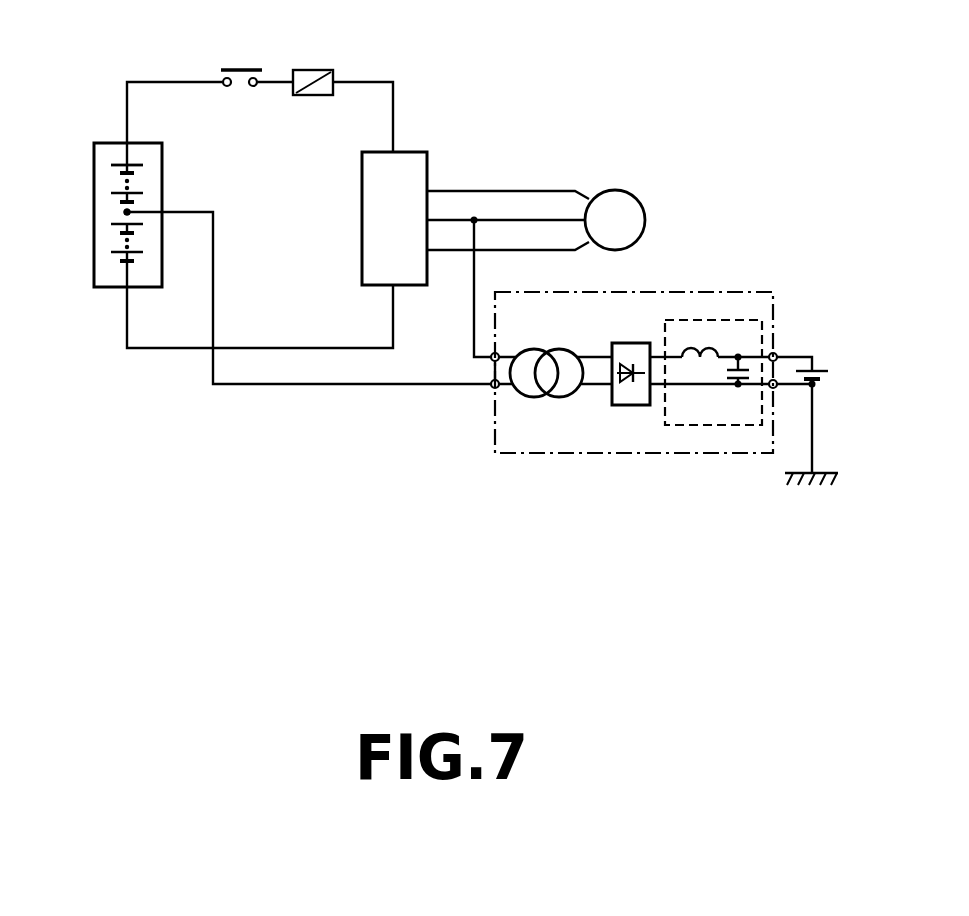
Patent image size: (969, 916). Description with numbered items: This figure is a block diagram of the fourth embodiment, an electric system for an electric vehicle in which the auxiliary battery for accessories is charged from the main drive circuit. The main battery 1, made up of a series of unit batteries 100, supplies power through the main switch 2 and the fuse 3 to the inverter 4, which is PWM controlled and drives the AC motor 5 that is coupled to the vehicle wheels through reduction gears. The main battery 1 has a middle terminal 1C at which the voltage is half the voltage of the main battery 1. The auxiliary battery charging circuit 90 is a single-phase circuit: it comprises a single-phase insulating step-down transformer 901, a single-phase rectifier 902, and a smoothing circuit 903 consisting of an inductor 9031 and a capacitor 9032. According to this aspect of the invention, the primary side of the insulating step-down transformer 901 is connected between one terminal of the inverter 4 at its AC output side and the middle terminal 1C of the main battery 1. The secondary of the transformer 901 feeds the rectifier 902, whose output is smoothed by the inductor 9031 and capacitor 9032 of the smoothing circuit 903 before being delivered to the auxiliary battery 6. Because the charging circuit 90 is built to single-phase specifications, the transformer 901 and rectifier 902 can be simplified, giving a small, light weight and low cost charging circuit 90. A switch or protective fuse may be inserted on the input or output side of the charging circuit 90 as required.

The main battery 1 is at (101, 143).
The unit batteries 100 is at (112, 171).
The middle terminal of the main battery 1C is at (125, 212).
The main switch 2 is at (235, 68).
The fuse 3 is at (313, 70).
The inverter 4 is at (411, 152).
The AC motor 5 is at (632, 192).
The auxiliary battery charging circuit 90 is at (668, 292).
The single-phase insulating step-down transformer 901 is at (547, 396).
The single-phase rectifier 902 is at (622, 405).
The smoothing circuit 903 is at (742, 320).
The inductor 9031 is at (700, 357).
The capacitor 9032 is at (755, 375).
The auxiliary battery 6 is at (829, 377).